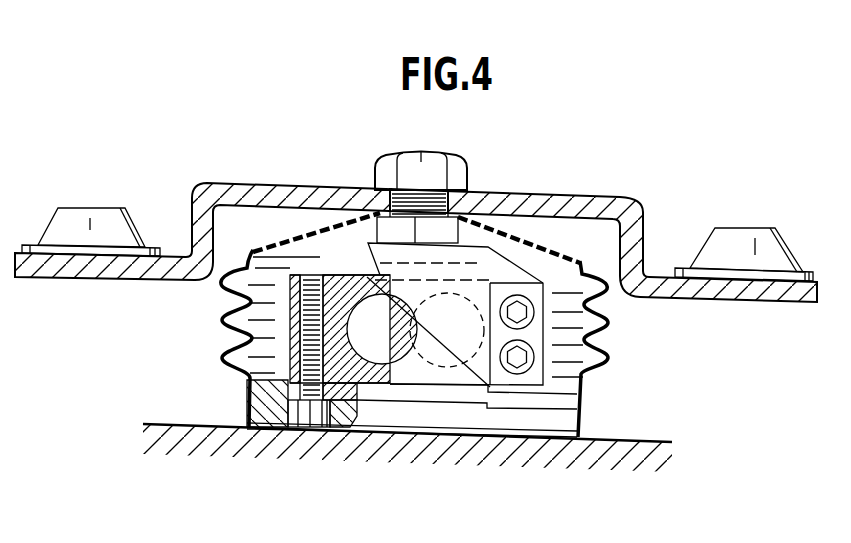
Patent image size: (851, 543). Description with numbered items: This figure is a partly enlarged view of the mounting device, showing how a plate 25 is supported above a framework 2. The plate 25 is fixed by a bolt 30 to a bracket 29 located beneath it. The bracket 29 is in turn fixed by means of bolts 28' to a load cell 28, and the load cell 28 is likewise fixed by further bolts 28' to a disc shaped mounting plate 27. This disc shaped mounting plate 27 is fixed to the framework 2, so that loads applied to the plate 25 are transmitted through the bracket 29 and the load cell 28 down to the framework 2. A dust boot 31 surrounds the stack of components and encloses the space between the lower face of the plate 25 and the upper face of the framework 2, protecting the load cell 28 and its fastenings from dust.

The framework 2 is at (178, 427).
The plate 25 is at (276, 184).
The disc shaped mounting plate 27 is at (450, 427).
The load cell 28 is at (369, 252).
The bolts 28' is at (315, 454).
The bracket 29 is at (493, 260).
The bolt 30 is at (413, 178).
The dust boot 31 is at (607, 362).